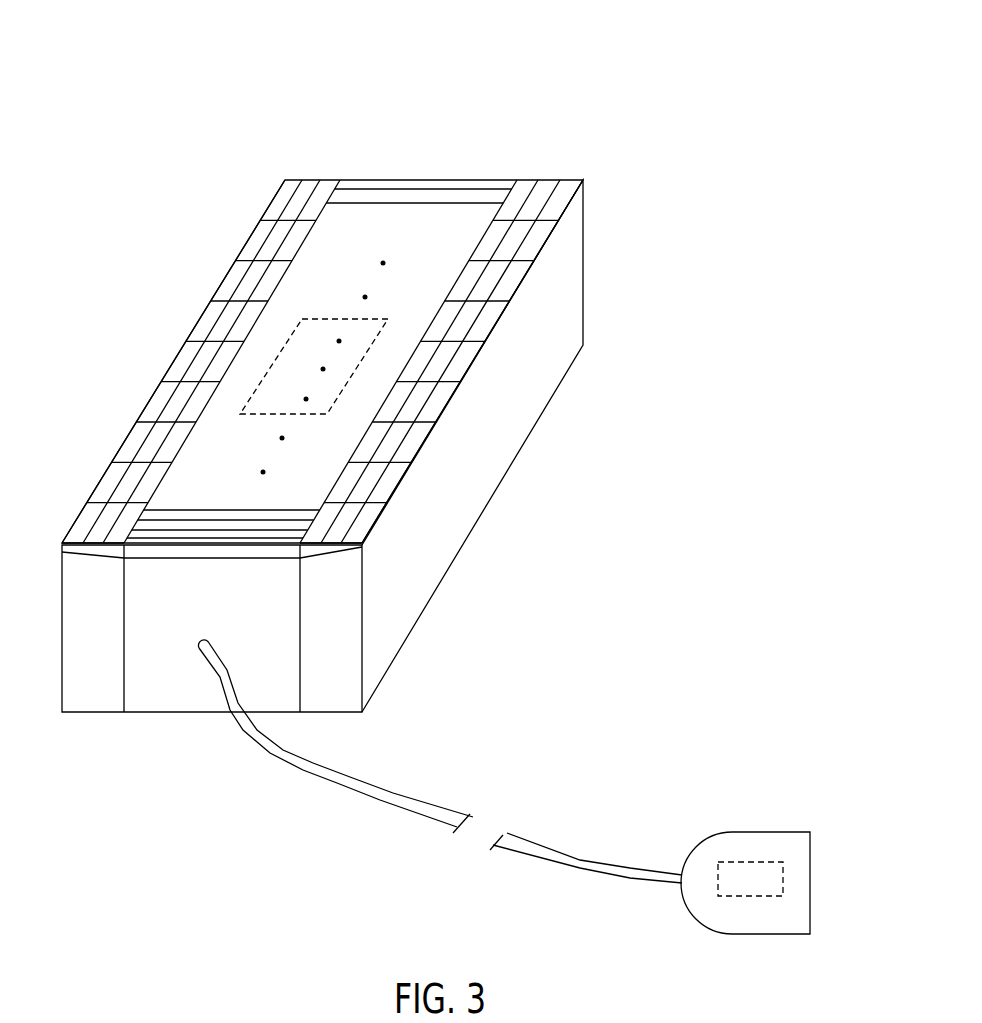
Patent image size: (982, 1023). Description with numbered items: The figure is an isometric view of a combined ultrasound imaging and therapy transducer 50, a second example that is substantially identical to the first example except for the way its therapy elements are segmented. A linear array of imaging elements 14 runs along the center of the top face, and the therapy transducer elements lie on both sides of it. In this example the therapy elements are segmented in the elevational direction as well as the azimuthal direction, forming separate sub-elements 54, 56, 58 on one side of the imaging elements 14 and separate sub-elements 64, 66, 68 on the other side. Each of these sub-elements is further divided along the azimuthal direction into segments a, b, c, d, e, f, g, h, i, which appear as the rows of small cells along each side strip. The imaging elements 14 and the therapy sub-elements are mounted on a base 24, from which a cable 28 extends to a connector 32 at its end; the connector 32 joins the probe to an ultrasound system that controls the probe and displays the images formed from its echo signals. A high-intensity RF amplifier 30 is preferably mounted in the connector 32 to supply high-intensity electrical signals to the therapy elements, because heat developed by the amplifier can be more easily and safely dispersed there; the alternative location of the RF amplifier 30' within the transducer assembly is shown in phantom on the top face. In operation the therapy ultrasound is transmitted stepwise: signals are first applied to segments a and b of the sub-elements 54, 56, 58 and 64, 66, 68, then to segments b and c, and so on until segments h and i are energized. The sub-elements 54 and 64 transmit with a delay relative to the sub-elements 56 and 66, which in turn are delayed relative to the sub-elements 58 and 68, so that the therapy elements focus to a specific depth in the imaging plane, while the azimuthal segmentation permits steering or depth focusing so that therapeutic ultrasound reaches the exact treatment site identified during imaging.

The combined ultrasound imaging and therapy transducer 50 is at (553, 70).
The imaging elements 14 is at (411, 180).
The base 24 is at (223, 603).
The cable 28 is at (360, 796).
The high-intensity RF amplifier 30 is at (750, 828).
The RF amplifier 30' is at (240, 335).
The connector 32 is at (737, 920).
The therapy transducer sub-element 54 is at (289, 174).
The therapy transducer sub-element 56 is at (311, 177).
The therapy transducer sub-element 58 is at (334, 178).
The therapy transducer sub-element 64 is at (569, 177).
The therapy transducer sub-element 66 is at (545, 178).
The therapy transducer sub-element 68 is at (527, 178).
The azimuthal segment a is at (272, 198).
The azimuthal segment b is at (247, 240).
The azimuthal segment c is at (229, 278).
The azimuthal segment d is at (192, 323).
The azimuthal segment e is at (171, 353).
The azimuthal segment f is at (152, 398).
The azimuthal segment g is at (131, 440).
The azimuthal segment h is at (101, 482).
The azimuthal segment i is at (84, 520).